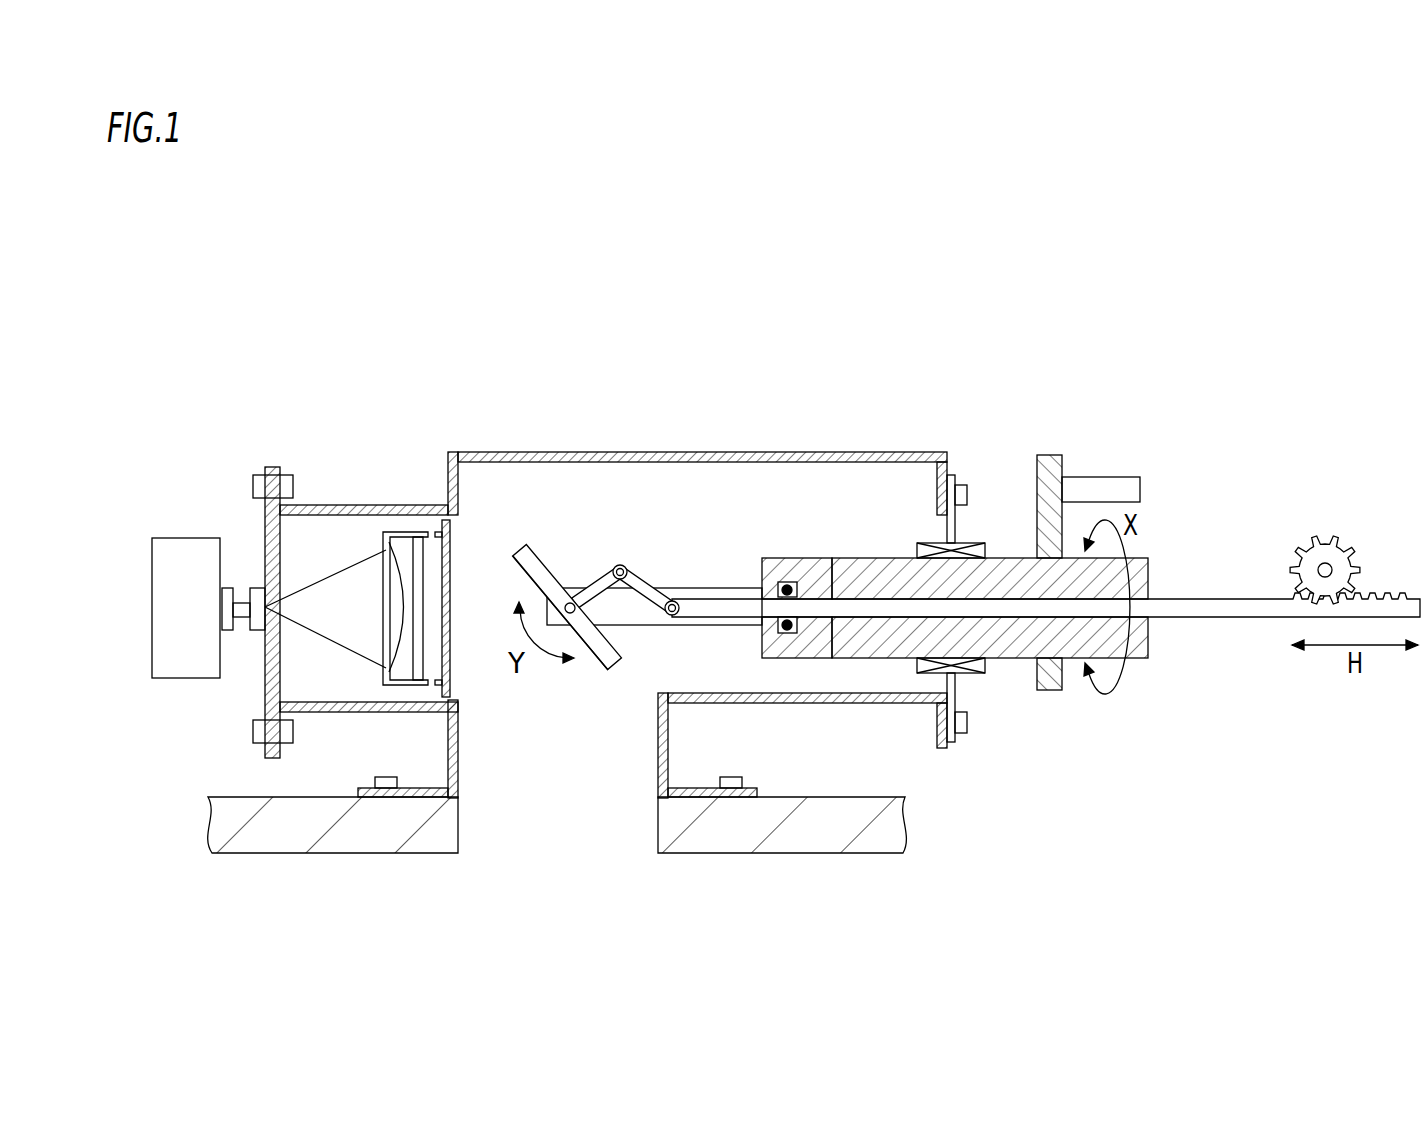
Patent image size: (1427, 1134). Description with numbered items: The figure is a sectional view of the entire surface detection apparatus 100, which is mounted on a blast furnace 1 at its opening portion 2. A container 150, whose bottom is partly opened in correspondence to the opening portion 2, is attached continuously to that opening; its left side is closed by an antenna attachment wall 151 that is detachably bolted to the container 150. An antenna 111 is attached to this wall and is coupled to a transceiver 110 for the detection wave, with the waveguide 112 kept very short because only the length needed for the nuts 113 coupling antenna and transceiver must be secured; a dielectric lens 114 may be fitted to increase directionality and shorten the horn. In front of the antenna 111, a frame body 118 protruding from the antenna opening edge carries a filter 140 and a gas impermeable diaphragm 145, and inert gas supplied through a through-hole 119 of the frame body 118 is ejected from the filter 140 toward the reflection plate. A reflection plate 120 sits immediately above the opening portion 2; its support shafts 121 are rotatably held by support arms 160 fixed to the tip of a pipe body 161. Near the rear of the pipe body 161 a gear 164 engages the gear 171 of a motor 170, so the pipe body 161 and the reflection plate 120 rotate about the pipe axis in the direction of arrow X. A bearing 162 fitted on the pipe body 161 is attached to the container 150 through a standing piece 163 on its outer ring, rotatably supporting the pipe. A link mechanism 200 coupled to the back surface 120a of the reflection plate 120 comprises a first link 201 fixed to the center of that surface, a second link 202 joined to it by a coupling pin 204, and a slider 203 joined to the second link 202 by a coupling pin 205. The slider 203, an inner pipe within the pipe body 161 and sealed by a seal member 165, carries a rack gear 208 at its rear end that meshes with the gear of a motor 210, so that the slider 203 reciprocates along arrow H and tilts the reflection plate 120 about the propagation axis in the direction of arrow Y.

The blast furnace 1 is at (833, 855).
The opening portion 2 is at (582, 857).
The surface detection apparatus 100 is at (940, 315).
The transceiver 110 is at (177, 537).
The antenna 111 is at (350, 565).
The waveguide 112 is at (238, 590).
The nuts 113 is at (252, 632).
The dielectric lens 114 is at (395, 555).
The frame body 118 is at (405, 688).
The through-hole 119 is at (449, 700).
The reflection plate 120 is at (517, 547).
The back surface 120a is at (548, 560).
The support shafts 121 is at (583, 620).
The filter 140 is at (452, 568).
The diaphragm 145 is at (416, 548).
The container 150 is at (873, 450).
The antenna attachment wall 151 is at (265, 540).
The support arms 160 is at (640, 627).
The pipe body 161 is at (1012, 660).
The bearing 162 is at (957, 705).
The standing piece 163 is at (957, 500).
The gear 164 is at (1030, 552).
The seal member 165 is at (762, 645).
The motor 170 is at (1100, 477).
The gear 171 is at (1048, 457).
The link mechanism 200 is at (825, 358).
The first link 201 is at (592, 578).
The second link 202 is at (650, 585).
The slider 203 is at (830, 560).
The coupling pin 204 is at (622, 565).
The coupling pin 205 is at (680, 600).
The rack gear 208 is at (1410, 597).
The motor 210 is at (1323, 560).